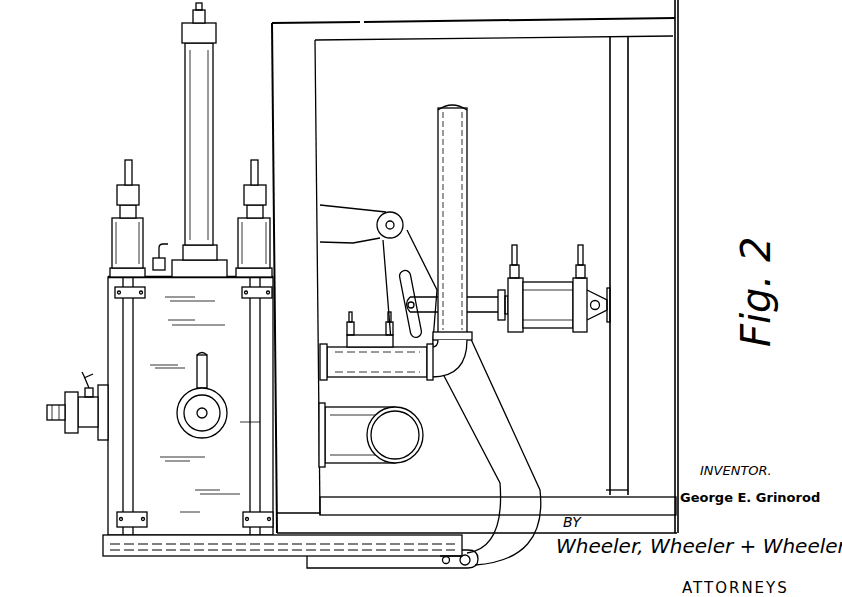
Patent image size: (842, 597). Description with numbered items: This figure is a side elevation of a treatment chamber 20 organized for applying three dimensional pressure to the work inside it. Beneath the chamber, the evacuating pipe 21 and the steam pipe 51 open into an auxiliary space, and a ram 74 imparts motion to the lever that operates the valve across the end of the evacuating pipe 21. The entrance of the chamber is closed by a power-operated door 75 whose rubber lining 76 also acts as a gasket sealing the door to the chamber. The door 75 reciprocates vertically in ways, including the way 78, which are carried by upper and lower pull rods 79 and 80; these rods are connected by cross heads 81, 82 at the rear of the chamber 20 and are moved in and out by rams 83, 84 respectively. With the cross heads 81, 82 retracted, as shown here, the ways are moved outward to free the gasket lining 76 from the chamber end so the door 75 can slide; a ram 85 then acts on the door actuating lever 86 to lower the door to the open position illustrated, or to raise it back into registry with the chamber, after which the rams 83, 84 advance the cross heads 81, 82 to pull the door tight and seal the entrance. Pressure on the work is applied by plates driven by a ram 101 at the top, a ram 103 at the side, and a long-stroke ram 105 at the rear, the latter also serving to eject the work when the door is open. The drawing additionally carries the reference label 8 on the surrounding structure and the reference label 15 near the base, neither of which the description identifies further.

The frame 8 is at (362, 22).
The pivot bracket 15 is at (385, 568).
The treatment chamber 20 is at (113, 335).
The evacuating pipe 21 is at (421, 440).
The steam pipe 51 is at (452, 182).
The ram 74 is at (368, 335).
The door 75 is at (206, 10).
The rubber lining 76 is at (212, 20).
The way 78 is at (232, 546).
The pull rod 79 is at (128, 323).
The pull rod 80 is at (252, 367).
The cross head 81 is at (128, 162).
The cross head 82 is at (255, 165).
The ram 83 is at (118, 240).
The ram 84 is at (241, 245).
The ram 85 is at (562, 298).
The door actuating lever 86 is at (484, 402).
The ram 101 is at (85, 425).
The ram 103 is at (192, 424).
The ram 105 is at (195, 173).